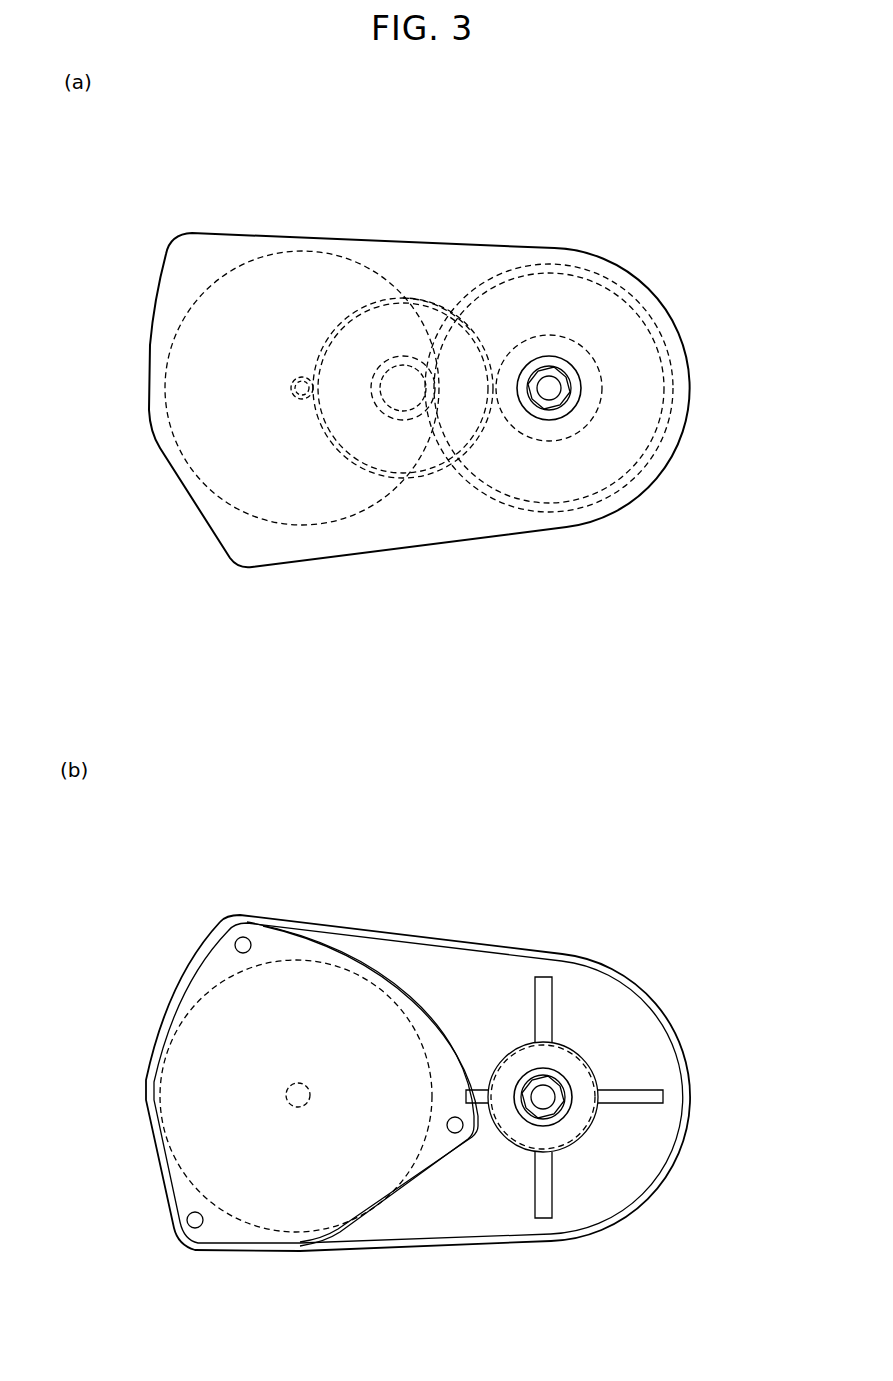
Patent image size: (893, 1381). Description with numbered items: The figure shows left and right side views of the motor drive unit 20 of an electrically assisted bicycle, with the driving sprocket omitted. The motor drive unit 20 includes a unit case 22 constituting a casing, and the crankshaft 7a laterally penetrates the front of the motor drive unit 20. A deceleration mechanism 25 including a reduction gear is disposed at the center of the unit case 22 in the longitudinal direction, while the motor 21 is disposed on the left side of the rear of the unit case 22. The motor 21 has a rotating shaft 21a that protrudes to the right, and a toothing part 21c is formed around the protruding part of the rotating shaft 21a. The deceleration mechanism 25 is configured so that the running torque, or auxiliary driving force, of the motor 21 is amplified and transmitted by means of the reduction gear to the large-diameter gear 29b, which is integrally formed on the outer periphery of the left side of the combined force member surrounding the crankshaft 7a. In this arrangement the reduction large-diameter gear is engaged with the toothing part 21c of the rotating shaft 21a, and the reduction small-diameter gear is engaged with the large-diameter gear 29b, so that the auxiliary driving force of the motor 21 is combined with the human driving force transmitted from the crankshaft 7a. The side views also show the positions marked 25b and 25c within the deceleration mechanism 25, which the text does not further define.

The motor drive unit 20 is at (443, 179).
The motor 21 is at (337, 522).
The rotating shaft 21a is at (290, 1105).
The toothing part 21c is at (295, 386).
The unit case 22 is at (618, 263).
The deceleration mechanism 25 is at (428, 294).
The gear teeth 25b is at (403, 300).
The gear shaft boss 25c is at (401, 420).
The large-diameter gear 29b is at (658, 450).
The crankshaft 7a is at (555, 393).